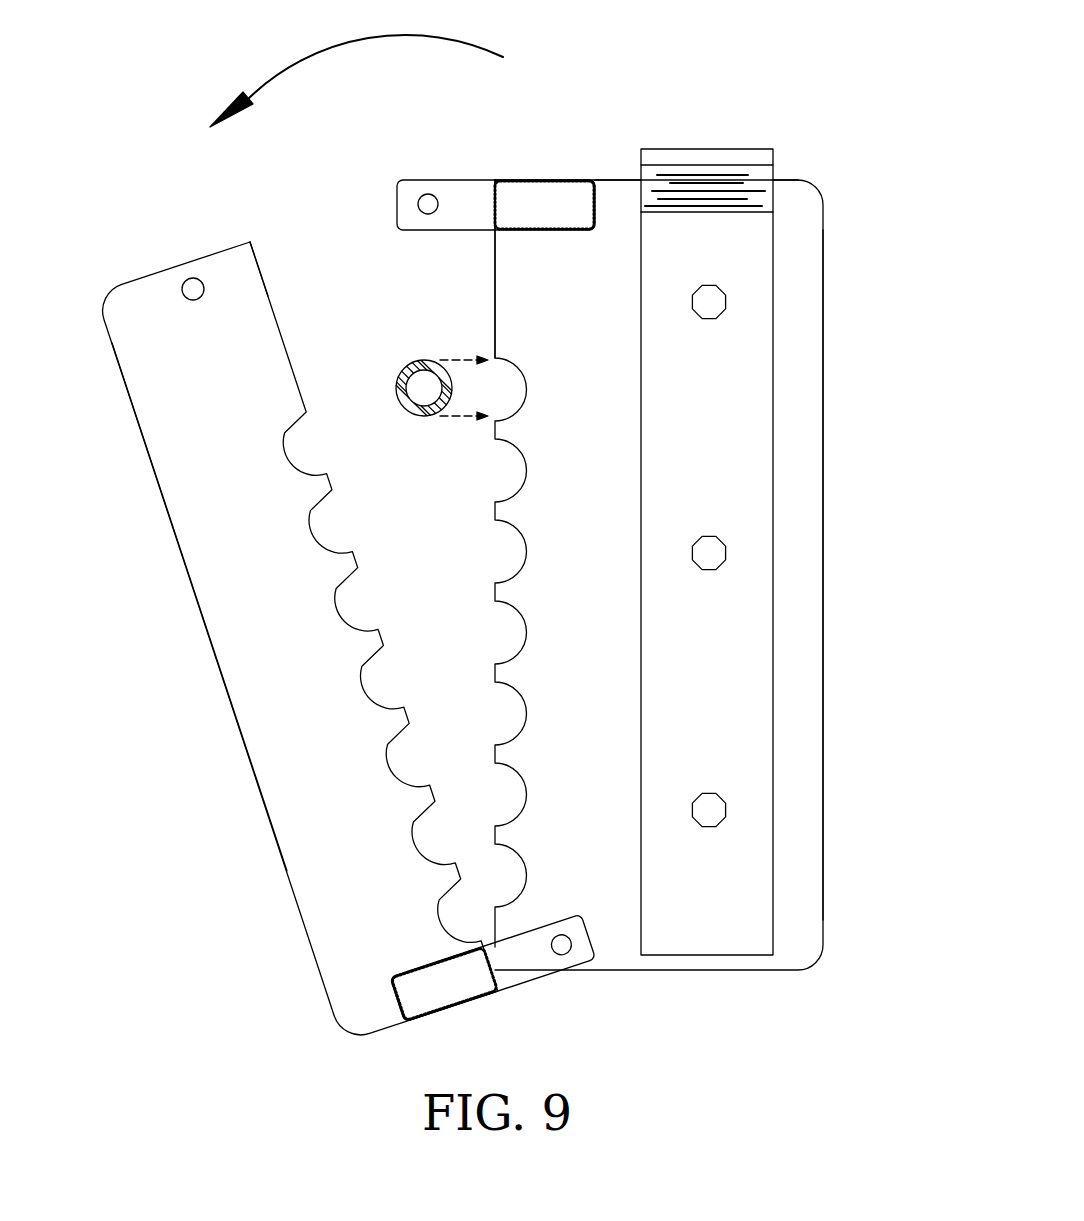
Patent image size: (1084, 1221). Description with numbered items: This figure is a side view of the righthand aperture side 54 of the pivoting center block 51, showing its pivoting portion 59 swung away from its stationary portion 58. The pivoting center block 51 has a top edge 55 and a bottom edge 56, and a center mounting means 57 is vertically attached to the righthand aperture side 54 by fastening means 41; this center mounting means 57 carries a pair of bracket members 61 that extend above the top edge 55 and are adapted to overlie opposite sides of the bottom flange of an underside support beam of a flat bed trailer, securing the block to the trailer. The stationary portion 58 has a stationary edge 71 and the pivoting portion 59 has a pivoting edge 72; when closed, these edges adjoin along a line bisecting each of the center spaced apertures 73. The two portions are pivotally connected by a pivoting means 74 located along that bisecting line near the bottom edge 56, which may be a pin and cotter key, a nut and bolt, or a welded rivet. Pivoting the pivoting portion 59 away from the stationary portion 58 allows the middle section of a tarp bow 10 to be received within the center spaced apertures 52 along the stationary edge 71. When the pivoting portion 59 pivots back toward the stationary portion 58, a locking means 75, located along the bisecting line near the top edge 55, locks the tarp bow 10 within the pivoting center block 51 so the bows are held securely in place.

The tarp bow 10 is at (418, 366).
The fastening means 41 is at (702, 308).
The pivoting center block 51 is at (445, 132).
The center spaced apertures 52 is at (518, 372).
The righthand aperture side 54 is at (388, 626).
The top edge 55 is at (618, 176).
The bottom edge 56 is at (547, 565).
The center mounting means 57 is at (761, 514).
The stationary portion 58 is at (803, 664).
The pivoting portion 59 is at (272, 790).
The bracket members 61 is at (740, 123).
The stationary edge 71 is at (497, 286).
The pivoting edge 72 is at (268, 288).
The center spaced apertures 73 is at (500, 174).
The pivoting means 74 is at (493, 968).
The locking means 75 is at (415, 184).